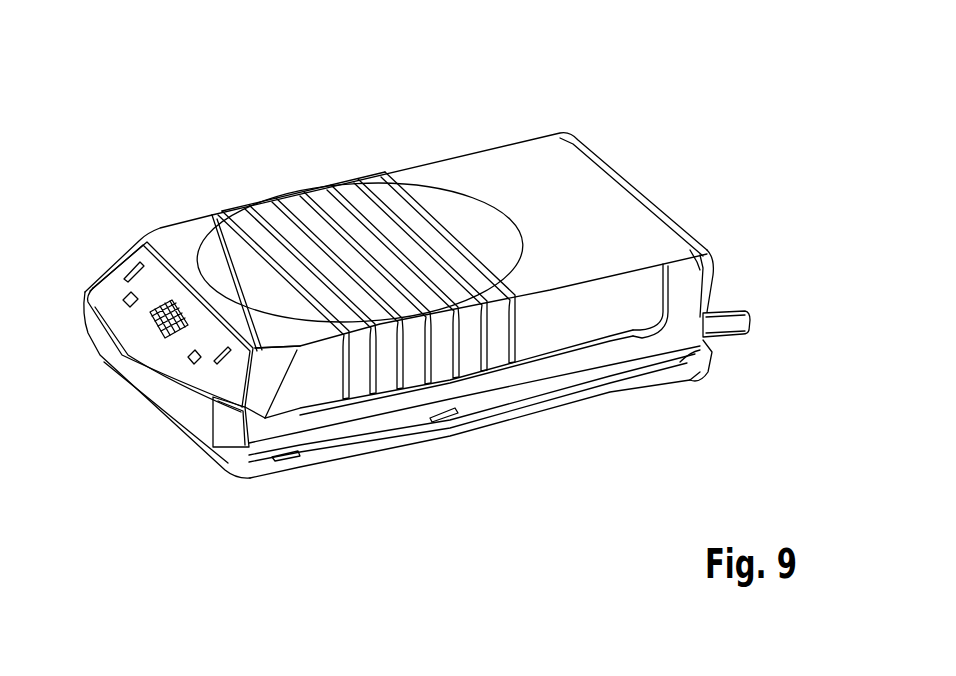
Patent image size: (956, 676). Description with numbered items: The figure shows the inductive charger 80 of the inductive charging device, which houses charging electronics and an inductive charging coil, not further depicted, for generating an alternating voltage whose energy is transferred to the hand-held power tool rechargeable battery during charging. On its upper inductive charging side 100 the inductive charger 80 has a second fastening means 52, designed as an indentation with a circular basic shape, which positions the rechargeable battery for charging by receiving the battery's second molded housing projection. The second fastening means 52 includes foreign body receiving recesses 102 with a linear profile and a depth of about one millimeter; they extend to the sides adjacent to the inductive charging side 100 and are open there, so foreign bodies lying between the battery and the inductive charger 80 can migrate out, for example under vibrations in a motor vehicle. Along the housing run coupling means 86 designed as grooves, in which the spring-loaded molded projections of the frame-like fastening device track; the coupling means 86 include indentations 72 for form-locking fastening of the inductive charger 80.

The inductive charger 80 is at (632, 128).
The second fastening means 52 is at (462, 182).
The inductive charging side 100 is at (355, 192).
The foreign body receiving recesses 102 is at (293, 200).
The coupling means 86 is at (547, 392).
The indentations 72 is at (287, 455).